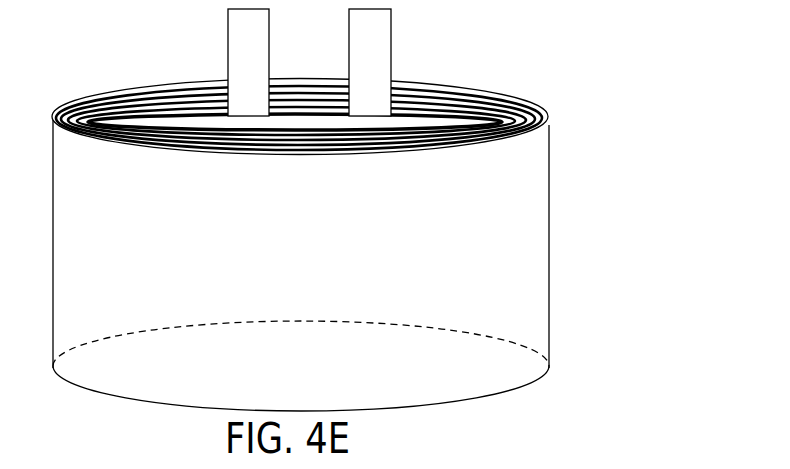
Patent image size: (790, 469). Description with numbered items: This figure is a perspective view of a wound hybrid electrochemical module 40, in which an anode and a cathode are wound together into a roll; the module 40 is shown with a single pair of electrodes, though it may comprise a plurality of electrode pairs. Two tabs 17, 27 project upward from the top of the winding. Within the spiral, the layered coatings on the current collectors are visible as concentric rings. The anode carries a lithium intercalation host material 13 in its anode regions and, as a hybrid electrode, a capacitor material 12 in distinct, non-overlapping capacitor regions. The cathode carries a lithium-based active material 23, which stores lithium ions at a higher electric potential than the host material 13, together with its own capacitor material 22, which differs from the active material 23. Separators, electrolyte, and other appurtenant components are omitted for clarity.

The wound hybrid electrochemical module 40 is at (584, 96).
The first tab 17 is at (252, 39).
The second tab 27 is at (381, 39).
The capacitor material 12 is at (485, 147).
The capacitor material 22 is at (509, 140).
The lithium intercalation host material 13 is at (408, 148).
The lithium-based active material 23 is at (372, 146).